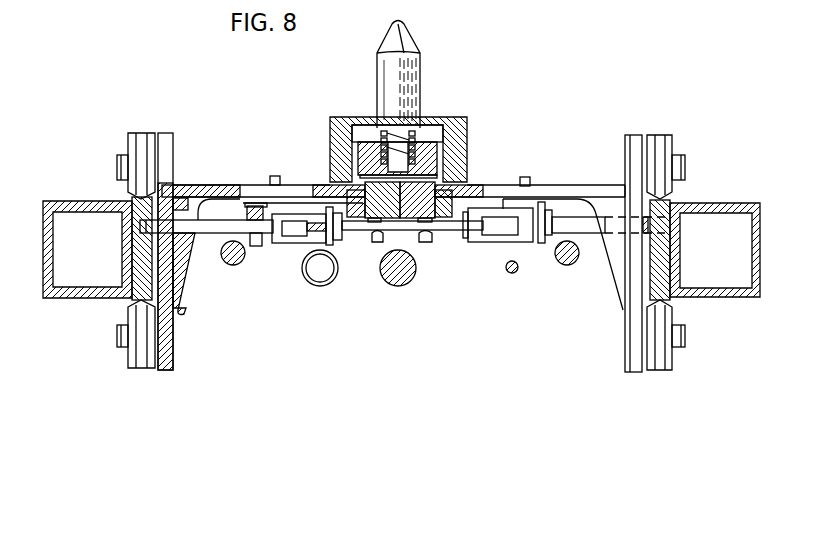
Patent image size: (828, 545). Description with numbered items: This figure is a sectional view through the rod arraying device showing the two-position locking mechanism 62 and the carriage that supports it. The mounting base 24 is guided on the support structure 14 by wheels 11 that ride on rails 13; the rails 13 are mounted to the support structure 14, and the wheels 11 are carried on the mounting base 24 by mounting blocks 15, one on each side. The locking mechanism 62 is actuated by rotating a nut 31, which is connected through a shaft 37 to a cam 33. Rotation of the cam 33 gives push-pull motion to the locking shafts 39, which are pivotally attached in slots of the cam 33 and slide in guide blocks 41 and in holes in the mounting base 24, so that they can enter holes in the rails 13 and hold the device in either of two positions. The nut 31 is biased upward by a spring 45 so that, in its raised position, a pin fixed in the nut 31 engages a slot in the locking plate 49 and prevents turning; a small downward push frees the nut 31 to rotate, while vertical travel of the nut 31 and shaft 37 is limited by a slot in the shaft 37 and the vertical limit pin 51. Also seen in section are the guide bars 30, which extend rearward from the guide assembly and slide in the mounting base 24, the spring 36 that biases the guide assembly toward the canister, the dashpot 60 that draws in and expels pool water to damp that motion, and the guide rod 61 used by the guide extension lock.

The wheels 11 is at (130, 143).
The rails 13 is at (137, 265).
The support structure 14 is at (77, 201).
The mounting blocks 15 is at (170, 150).
The mounting base 24 is at (578, 186).
The guide bars 30 is at (233, 266).
The nut 31 is at (405, 40).
The cam 33 is at (458, 231).
The spring 36 is at (330, 287).
The shaft 37 is at (404, 220).
The locking shafts 39 is at (205, 230).
The guide blocks 41 is at (255, 248).
The spring 45 is at (433, 124).
The locking plate 49 is at (467, 120).
The vertical limit pin 51 is at (418, 170).
The dashpot 60 is at (403, 278).
The guide rod 61 is at (511, 274).
The two-position locking mechanism 62 is at (522, 68).